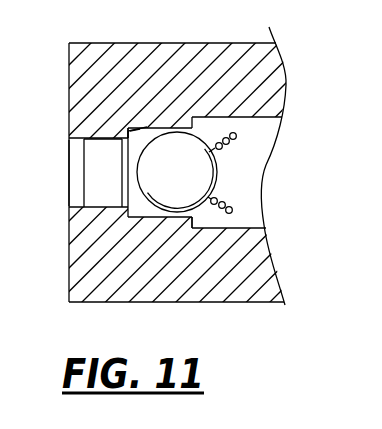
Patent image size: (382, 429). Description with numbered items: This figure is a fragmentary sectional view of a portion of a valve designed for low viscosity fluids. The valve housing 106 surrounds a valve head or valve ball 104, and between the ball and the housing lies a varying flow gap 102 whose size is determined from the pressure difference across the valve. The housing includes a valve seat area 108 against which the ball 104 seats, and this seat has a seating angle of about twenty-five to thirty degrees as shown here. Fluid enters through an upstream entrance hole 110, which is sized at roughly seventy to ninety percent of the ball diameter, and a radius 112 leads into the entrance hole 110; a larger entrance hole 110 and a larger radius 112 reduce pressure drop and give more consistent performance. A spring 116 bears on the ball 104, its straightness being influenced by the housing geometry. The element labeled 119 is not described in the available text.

The flow gap 102 is at (168, 213).
The valve ball 104 is at (155, 187).
The valve housing 106 is at (258, 270).
The valve seat area 108 is at (130, 133).
The entrance hole 110 is at (72, 193).
The radius 112 is at (69, 138).
The spring 116 is at (232, 211).
The gap 119 is at (223, 218).